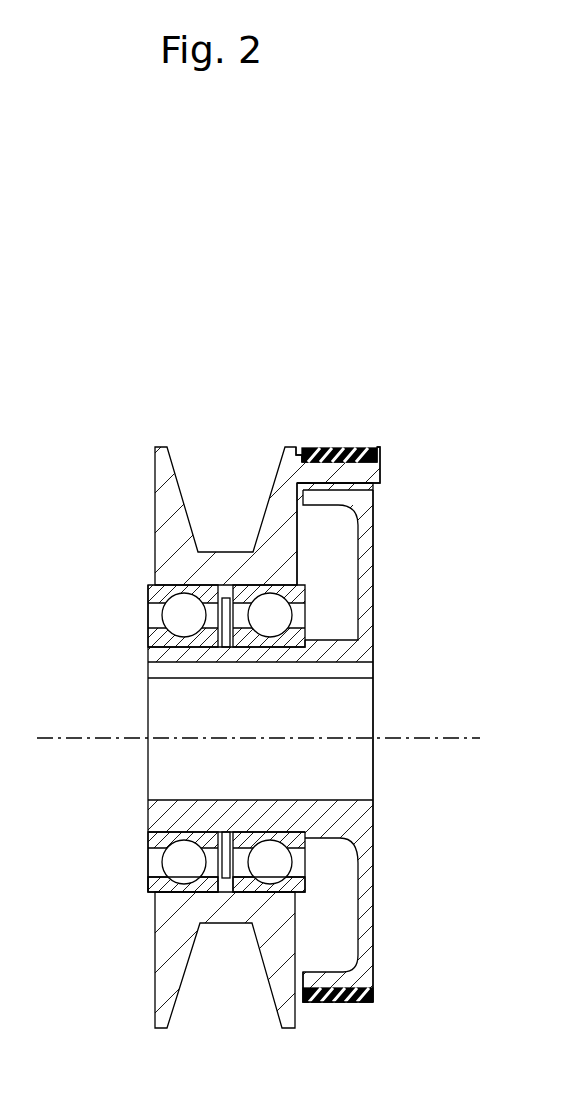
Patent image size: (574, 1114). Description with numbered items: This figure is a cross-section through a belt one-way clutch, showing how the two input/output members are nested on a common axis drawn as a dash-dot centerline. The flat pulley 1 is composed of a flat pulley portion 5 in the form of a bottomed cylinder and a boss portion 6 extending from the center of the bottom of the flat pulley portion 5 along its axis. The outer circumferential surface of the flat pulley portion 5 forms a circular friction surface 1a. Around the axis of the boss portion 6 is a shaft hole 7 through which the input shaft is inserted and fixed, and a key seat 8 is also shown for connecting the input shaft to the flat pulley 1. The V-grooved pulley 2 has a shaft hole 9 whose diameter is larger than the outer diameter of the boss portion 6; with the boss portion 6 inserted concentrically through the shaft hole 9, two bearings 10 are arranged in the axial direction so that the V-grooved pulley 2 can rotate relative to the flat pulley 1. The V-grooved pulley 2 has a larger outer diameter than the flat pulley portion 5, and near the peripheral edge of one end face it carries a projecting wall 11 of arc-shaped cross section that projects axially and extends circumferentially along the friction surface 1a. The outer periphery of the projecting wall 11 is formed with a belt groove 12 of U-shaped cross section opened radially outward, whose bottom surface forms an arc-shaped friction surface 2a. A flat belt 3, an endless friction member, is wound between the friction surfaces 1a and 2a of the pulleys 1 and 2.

The flat pulley 1 is at (383, 883).
The circular friction surface 1a is at (340, 1002).
The V-grooved pulley 2 is at (145, 506).
The arc-shaped friction surface 2a is at (342, 447).
The flat belt 3 is at (373, 993).
The flat pulley portion 5 is at (373, 508).
The boss portion 6 is at (342, 638).
The shaft hole 7 is at (332, 800).
The key seat 8 is at (333, 663).
The shaft hole 9 is at (173, 892).
The bearings 10 is at (198, 895).
The projecting wall 11 is at (382, 465).
The belt groove 12 is at (313, 447).